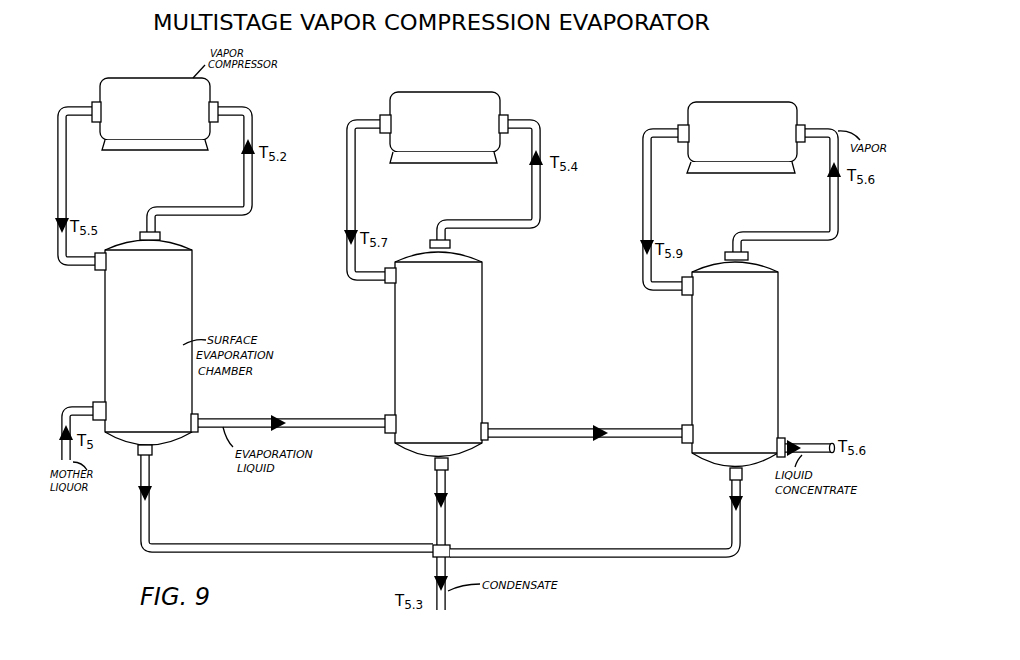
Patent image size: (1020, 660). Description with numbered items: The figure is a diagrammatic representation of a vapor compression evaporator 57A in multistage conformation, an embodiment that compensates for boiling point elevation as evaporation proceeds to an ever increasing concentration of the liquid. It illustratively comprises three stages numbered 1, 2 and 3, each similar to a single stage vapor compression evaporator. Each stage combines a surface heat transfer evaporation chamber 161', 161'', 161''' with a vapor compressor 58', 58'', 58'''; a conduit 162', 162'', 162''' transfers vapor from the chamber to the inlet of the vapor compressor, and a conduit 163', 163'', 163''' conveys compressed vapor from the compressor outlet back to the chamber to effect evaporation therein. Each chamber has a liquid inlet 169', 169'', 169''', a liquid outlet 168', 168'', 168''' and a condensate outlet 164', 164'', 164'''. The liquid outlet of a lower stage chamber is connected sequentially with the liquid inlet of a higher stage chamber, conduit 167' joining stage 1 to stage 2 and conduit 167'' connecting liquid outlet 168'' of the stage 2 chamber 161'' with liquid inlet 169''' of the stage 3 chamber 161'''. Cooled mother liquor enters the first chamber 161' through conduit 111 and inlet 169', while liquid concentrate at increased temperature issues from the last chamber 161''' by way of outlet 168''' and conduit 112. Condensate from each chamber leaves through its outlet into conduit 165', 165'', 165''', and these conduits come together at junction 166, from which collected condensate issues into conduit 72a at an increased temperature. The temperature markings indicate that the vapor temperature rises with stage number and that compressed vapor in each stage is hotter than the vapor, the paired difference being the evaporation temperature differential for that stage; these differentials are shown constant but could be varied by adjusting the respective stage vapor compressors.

The multistage vapor compression evaporator 57A is at (375, 58).
The vapor compressor 58' is at (155, 99).
The vapor compressor 58'' is at (444, 112).
The vapor compressor 58''' is at (741, 122).
The surface heat transfer evaporation chamber 161' is at (119, 338).
The surface heat transfer evaporation chamber 161'' is at (408, 348).
The surface heat transfer evaporation chamber 161''' is at (705, 359).
The conduit 162' is at (223, 171).
The conduit 162'' is at (517, 182).
The conduit 162''' is at (814, 192).
The conduit 163' is at (89, 186).
The conduit 163'' is at (379, 200).
The conduit 163''' is at (678, 209).
The condensate outlet 164' is at (174, 452).
The condensate outlet 164'' is at (469, 466).
The condensate outlet 164''' is at (696, 476).
The conduit 165' is at (285, 501).
The conduit 165'' is at (469, 540).
The conduit 165''' is at (627, 516).
The junction 166 is at (433, 546).
The conduit 167' is at (291, 409).
The conduit 167'' is at (585, 419).
The liquid outlet 168' is at (213, 409).
The liquid outlet 168'' is at (502, 419).
The liquid outlet 168''' is at (800, 429).
The liquid inlet 169' is at (91, 392).
The liquid inlet 169'' is at (369, 411).
The liquid inlet 169''' is at (662, 418).
The conduit 111 is at (73, 402).
The conduit 112 is at (822, 441).
The conduit 72a is at (436, 578).
The stage 1 is at (216, 291).
The stage 2 is at (505, 309).
The stage 3 is at (801, 318).